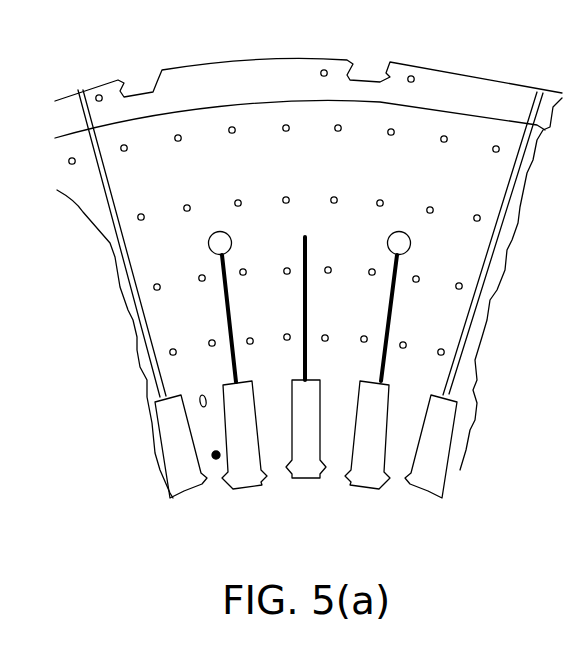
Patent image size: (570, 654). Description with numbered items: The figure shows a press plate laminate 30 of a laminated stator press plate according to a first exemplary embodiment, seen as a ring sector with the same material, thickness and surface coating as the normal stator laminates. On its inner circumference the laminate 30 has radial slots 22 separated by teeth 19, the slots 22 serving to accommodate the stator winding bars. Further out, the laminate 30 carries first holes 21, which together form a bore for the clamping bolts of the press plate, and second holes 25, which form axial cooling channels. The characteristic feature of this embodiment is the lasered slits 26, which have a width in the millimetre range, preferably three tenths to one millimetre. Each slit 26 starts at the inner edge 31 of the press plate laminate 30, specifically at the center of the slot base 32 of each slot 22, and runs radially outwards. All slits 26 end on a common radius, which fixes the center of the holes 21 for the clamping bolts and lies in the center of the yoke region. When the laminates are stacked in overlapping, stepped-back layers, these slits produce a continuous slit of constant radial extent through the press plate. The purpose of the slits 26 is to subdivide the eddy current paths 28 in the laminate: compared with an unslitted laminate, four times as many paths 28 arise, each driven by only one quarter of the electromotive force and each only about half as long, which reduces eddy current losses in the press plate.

The eddy current paths 28 is at (265, 245).
The first holes 21 is at (208, 241).
The press plate laminate 30 is at (143, 315).
The slits 26 is at (298, 331).
The second holes 25 is at (428, 281).
The radial slots 22 is at (379, 420).
The teeth 19 is at (337, 450).
The inner edge 31 is at (229, 392).
The slot base 32 is at (569, 452).